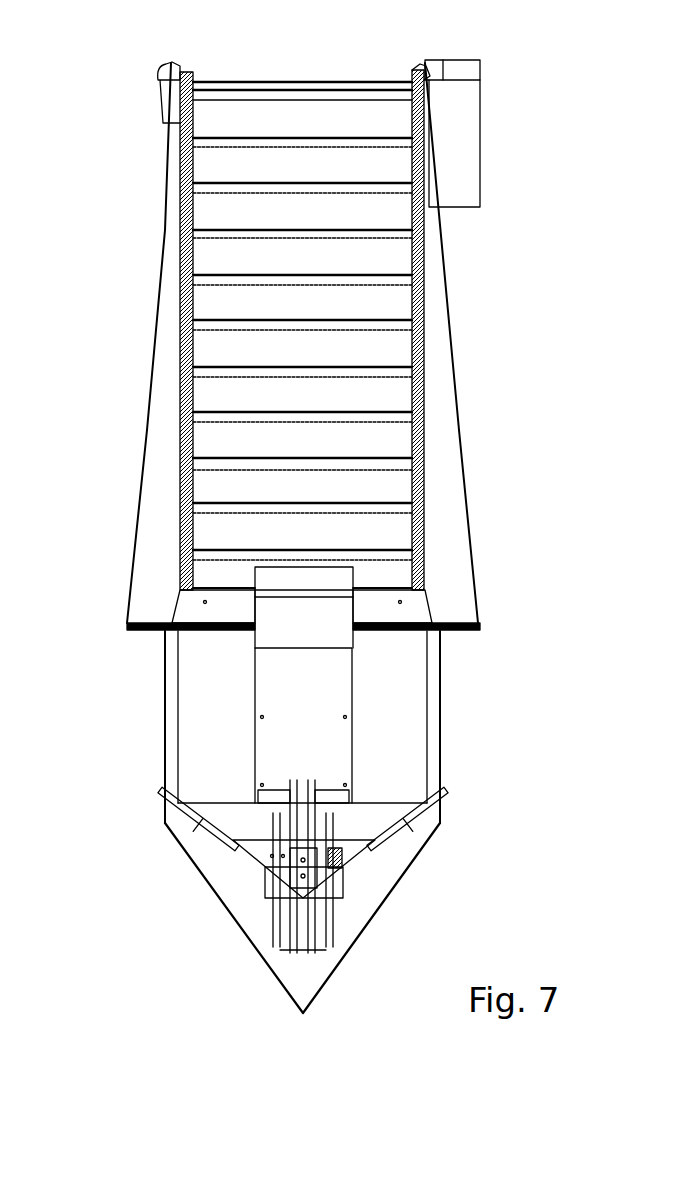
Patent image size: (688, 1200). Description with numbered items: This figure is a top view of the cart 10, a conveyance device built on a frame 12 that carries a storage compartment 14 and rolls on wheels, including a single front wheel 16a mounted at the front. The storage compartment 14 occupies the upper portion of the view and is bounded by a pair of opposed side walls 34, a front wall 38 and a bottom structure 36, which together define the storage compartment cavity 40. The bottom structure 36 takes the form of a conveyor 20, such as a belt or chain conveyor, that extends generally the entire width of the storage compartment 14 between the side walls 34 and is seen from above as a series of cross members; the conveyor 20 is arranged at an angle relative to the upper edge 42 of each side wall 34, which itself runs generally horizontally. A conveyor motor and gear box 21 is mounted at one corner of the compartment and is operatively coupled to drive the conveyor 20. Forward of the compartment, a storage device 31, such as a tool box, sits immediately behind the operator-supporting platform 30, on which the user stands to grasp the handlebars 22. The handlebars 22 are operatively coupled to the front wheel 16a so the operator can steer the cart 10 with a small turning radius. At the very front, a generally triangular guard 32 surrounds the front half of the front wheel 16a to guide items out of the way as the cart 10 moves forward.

The cart 10 is at (600, 128).
The frame 12 is at (410, 683).
The storage compartment 14 is at (407, 404).
The front wheel 16a is at (303, 955).
The conveyor 20 is at (382, 263).
The conveyor motor and gear box 21 is at (467, 142).
The handlebars 22 is at (177, 807).
The platform 30 is at (410, 733).
The storage device 31 is at (304, 607).
The guard 32 is at (347, 957).
The side walls 34 is at (442, 352).
The bottom structure 36 is at (320, 122).
The front wall 38 is at (462, 633).
The storage compartment cavity 40 is at (158, 402).
The upper edge 42 is at (138, 505).